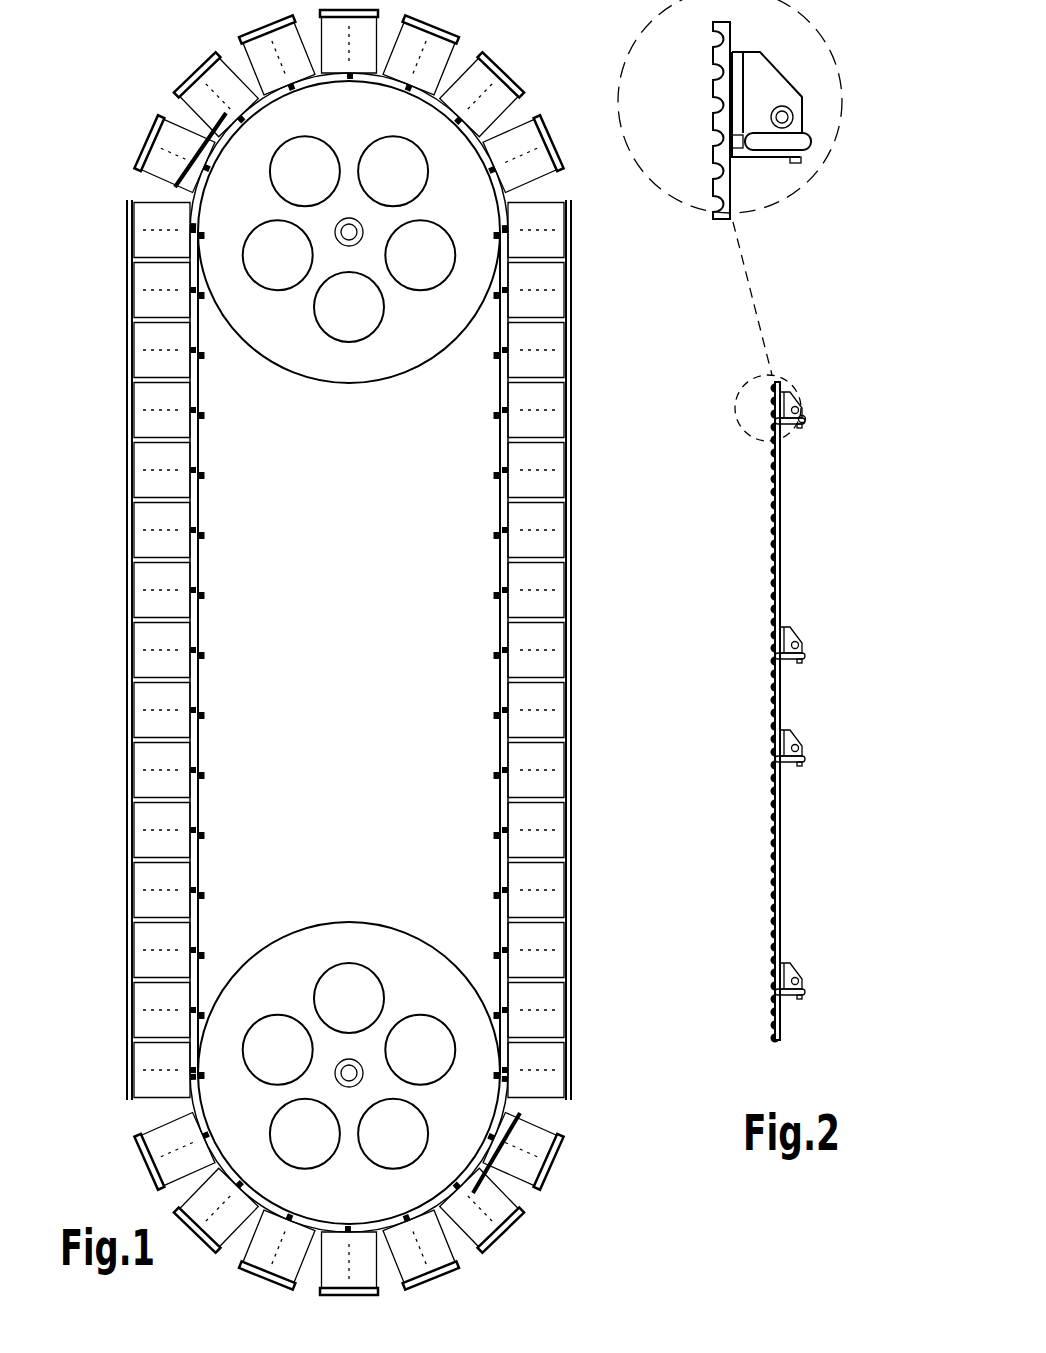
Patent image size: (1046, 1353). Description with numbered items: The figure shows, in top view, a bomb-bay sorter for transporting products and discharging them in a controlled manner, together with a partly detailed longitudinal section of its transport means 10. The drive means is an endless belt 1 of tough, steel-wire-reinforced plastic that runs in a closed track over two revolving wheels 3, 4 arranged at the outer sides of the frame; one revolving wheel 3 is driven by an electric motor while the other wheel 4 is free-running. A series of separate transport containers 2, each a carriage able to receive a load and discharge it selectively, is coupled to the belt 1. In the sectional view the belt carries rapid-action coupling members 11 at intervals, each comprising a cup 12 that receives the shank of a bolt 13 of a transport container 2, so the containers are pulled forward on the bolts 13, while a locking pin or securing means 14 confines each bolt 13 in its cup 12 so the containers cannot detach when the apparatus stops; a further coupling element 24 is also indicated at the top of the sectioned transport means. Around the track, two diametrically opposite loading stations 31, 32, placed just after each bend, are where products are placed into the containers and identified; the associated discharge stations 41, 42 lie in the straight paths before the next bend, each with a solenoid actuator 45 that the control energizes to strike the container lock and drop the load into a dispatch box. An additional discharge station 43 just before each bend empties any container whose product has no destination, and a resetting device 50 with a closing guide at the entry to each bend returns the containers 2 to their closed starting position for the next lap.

In FIG. 1, the endless belt 1 is at (200, 582).
In FIG. 2, the endless belt 1 is at (723, 97).
In FIG. 1, the transport container 2 is at (178, 825).
In FIG. 1, the revolving wheel 3 is at (340, 366).
In FIG. 1, the revolving wheel 4 is at (333, 943).
In FIG. 2, the chain side view 10 is at (779, 780).
In FIG. 2, the rapid-action coupling member 11 is at (768, 90).
In FIG. 2, the cup 12 is at (780, 158).
In FIG. 2, the bolt 13 is at (784, 117).
In FIG. 2, the securing means 14 is at (807, 146).
In FIG. 2, the roller 24 is at (805, 420).
In FIG. 1, the loading station 31 is at (580, 290).
In FIG. 1, the loading station 32 is at (115, 1070).
In FIG. 1, the discharge station 41 is at (575, 590).
In FIG. 1, the discharge station 42 is at (115, 593).
In FIG. 1, the additional discharge station 43 is at (112, 238).
In FIG. 1, the actuator 45 is at (205, 537).
In FIG. 1, the resetting device 50 is at (157, 122).